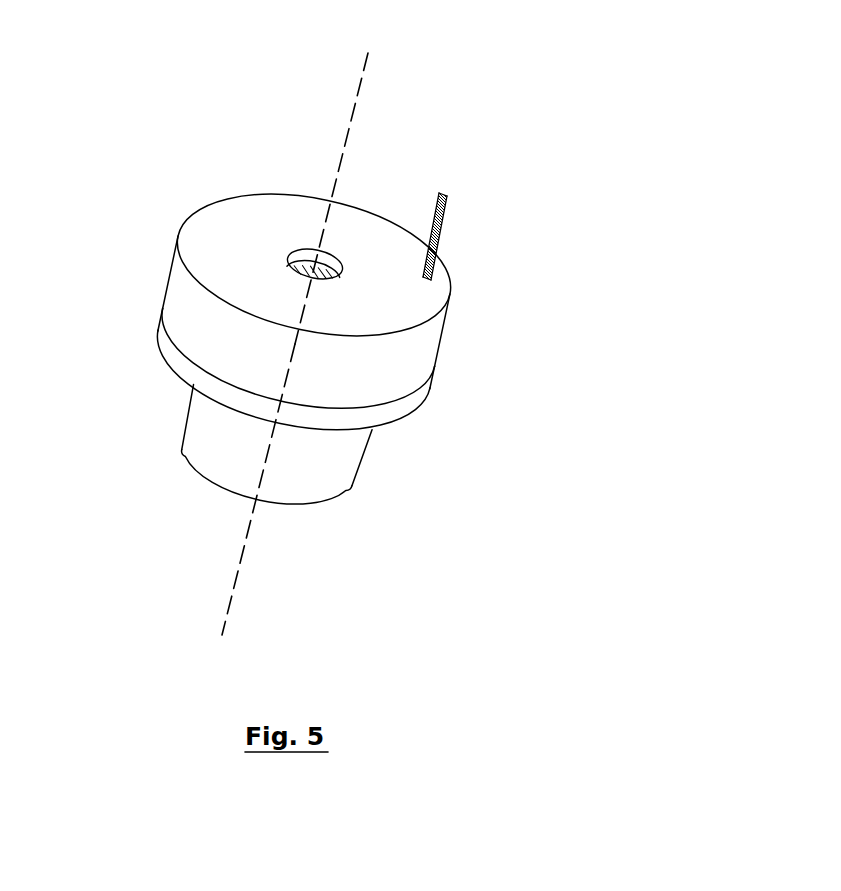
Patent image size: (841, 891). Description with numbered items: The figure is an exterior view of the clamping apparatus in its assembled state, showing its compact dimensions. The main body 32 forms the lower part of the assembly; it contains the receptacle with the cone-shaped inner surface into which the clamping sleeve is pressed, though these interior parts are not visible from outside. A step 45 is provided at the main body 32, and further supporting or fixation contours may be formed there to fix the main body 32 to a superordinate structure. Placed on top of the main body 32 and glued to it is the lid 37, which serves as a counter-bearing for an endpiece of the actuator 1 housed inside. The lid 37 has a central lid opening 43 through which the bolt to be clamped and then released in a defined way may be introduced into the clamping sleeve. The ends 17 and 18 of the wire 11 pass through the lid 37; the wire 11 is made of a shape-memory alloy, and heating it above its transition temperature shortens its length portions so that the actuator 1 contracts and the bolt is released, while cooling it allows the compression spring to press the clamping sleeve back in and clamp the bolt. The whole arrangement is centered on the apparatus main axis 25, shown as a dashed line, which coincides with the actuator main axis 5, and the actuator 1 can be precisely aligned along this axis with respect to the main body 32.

The actuator 1 is at (428, 455).
The actuator main axis 5 is at (362, 80).
The wire 11 is at (440, 245).
The end of the wire 17 is at (442, 197).
The end of the wire 18 is at (445, 205).
The apparatus main axis 25 is at (232, 607).
The main body 32 is at (222, 462).
The lid 37 is at (177, 240).
The central lid opening 43 is at (298, 258).
The step 45 is at (172, 372).